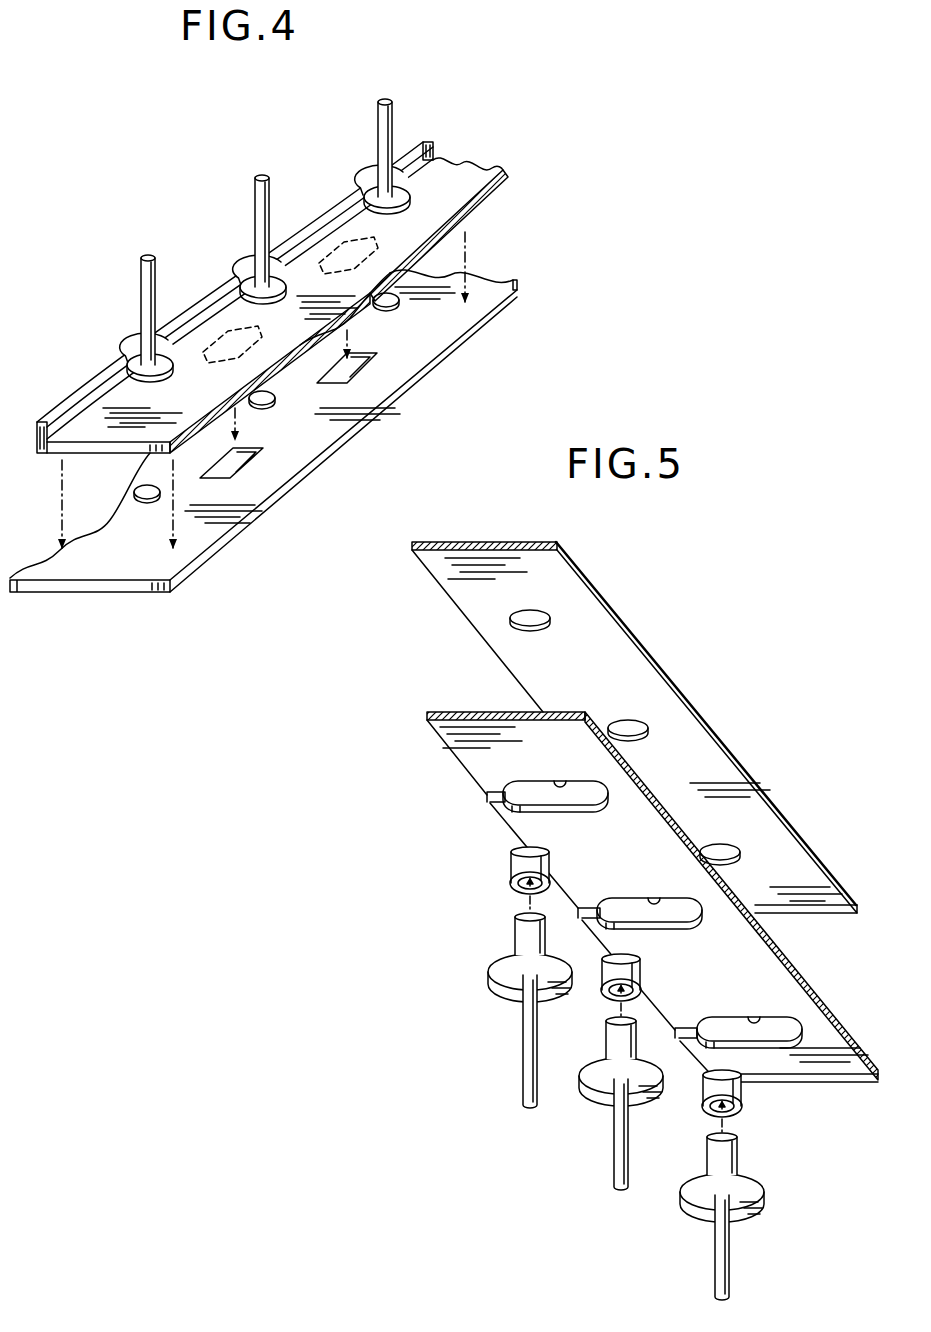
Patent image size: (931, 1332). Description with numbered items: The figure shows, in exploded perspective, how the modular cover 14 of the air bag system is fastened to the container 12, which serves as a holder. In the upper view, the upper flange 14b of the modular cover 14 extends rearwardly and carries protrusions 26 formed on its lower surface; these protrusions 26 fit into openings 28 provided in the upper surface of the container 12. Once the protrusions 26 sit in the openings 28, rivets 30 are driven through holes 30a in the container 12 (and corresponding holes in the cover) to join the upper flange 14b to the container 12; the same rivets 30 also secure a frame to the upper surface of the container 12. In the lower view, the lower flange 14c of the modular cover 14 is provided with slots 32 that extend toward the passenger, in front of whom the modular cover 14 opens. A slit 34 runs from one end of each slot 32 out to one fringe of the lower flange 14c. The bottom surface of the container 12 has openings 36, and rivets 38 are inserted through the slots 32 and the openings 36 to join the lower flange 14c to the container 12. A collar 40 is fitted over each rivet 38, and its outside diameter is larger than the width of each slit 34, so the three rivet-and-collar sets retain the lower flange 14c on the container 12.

In FIG. 4, the container 12 is at (103, 582).
In FIG. 5, the container 12 is at (717, 735).
In FIG. 4, the modular cover 14 is at (455, 153).
In FIG. 5, the modular cover 14 is at (450, 700).
In FIG. 4, the upper flange 14b is at (473, 170).
In FIG. 5, the lower flange 14c is at (783, 983).
In FIG. 4, the protrusions 26 is at (222, 337).
In FIG. 4, the openings 28 is at (245, 466).
In FIG. 4, the rivets 30 is at (140, 300).
In FIG. 4, the holes 30a is at (143, 503).
In FIG. 5, the slots 32 is at (560, 781).
In FIG. 5, the slit 34 is at (485, 796).
In FIG. 5, the openings 36 is at (548, 613).
In FIG. 5, the rivets 38 is at (500, 977).
In FIG. 5, the collar 40 is at (520, 857).